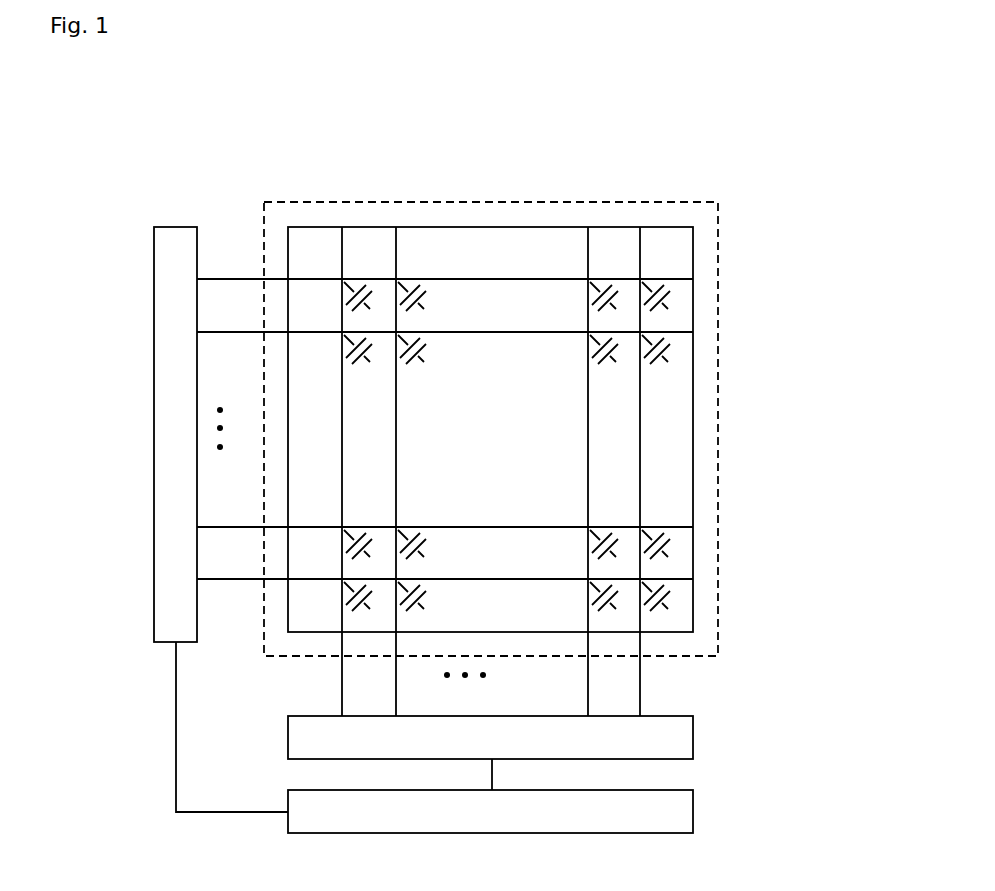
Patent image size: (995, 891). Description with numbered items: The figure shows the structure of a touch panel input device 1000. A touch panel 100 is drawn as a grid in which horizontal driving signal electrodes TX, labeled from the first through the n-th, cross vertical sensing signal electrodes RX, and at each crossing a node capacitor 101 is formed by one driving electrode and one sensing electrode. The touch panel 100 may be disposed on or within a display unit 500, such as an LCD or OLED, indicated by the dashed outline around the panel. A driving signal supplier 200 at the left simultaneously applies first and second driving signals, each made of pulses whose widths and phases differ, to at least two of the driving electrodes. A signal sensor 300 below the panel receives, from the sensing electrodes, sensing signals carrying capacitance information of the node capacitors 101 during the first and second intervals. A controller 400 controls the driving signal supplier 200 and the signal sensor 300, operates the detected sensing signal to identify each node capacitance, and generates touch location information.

The touch panel input device 1000 is at (690, 170).
The touch panel 100 is at (694, 250).
The node capacitor 101 is at (413, 282).
The driving signal supplier 200 is at (172, 226).
The signal sensor 300 is at (695, 747).
The controller 400 is at (695, 813).
The display unit 500 is at (718, 202).